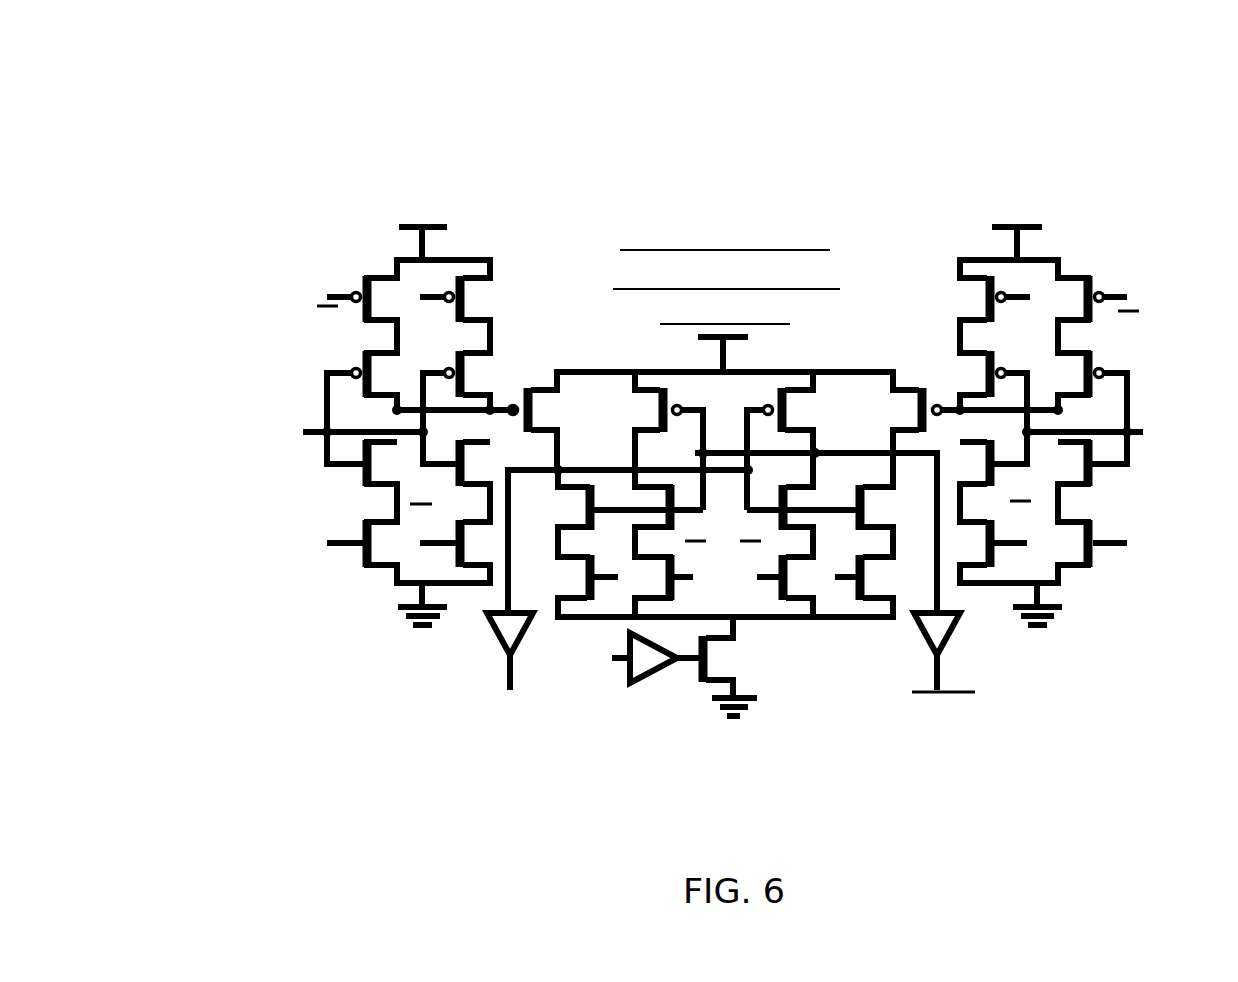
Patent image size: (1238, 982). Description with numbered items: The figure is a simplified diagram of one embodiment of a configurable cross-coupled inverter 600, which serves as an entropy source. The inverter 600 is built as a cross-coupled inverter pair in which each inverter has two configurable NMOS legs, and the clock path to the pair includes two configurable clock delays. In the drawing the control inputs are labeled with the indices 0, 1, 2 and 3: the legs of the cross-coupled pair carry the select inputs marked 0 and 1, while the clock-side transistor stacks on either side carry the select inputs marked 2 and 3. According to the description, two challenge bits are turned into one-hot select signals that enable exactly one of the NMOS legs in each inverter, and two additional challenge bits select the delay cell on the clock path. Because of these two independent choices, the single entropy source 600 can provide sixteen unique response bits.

The configurable cross-coupled inverter 600 is at (152, 37).
The C0 configuration NMOS transistor pair 0 is at (638, 545).
The C1 configuration NMOS transistor pair 1 is at (816, 536).
The C2 configuration transistor block 2 is at (391, 424).
The C3 configuration transistor block 3 is at (1062, 424).